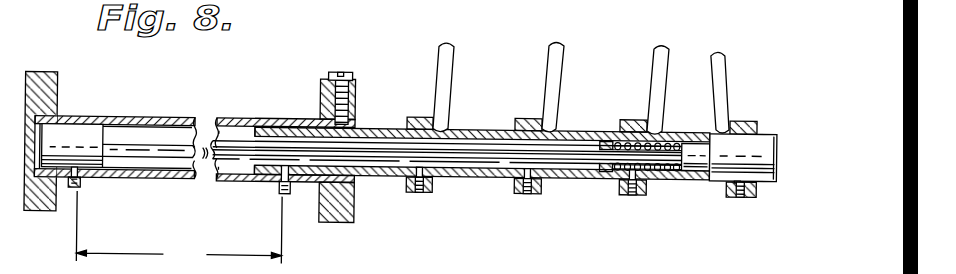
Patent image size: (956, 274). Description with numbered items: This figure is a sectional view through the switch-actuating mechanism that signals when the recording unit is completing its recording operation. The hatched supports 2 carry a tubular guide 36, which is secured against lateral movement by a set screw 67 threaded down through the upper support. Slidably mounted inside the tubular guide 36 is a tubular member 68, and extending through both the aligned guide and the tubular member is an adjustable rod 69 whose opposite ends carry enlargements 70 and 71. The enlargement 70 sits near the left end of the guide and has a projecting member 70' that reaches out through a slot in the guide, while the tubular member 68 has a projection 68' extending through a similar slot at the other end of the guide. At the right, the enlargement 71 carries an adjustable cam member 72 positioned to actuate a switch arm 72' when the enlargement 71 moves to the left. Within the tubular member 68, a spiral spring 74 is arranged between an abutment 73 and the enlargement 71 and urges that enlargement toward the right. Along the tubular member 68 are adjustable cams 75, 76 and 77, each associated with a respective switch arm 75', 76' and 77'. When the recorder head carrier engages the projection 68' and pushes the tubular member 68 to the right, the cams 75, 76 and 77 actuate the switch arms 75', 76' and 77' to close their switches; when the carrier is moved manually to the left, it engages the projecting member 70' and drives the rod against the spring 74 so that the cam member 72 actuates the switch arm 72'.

The wall / support plate 2 is at (43, 212).
The tubular guide 36 is at (150, 118).
The set screw 67 is at (344, 70).
The tubular member 68 is at (482, 173).
The projection 68' is at (265, 197).
The adjustable rod 69 is at (230, 165).
The enlargement 70 is at (74, 126).
The projecting member 70' is at (102, 190).
The enlargement 71 is at (698, 174).
The adjustable cam member 72 is at (751, 148).
The switch arm 72' is at (741, 92).
The abutment 73 is at (602, 176).
The spiral spring 74 is at (662, 178).
The adjustable cam 75 is at (415, 200).
The switch arm 75' is at (452, 88).
The adjustable cam 76 is at (528, 200).
The switch arm 76' is at (559, 87).
The adjustable cam 77 is at (637, 210).
The switch arm 77' is at (662, 90).